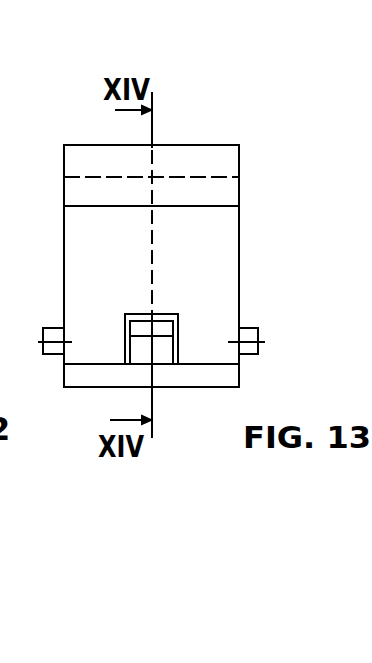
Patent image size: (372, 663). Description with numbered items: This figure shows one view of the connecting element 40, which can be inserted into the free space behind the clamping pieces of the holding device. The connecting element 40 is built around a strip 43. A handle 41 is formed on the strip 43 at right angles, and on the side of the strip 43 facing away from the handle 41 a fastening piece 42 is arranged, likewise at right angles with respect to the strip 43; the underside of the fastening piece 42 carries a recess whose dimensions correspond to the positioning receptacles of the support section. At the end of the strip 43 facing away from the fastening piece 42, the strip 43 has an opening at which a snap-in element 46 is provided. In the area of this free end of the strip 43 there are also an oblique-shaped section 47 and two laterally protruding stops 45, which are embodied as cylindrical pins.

The connecting element 40 is at (181, 226).
The handle 41 is at (228, 187).
The fastening piece 42 is at (181, 146).
The strip 43 is at (220, 256).
The stops 45 is at (252, 334).
The snap-in element 46 is at (138, 316).
The oblique-shaped section 47 is at (186, 372).